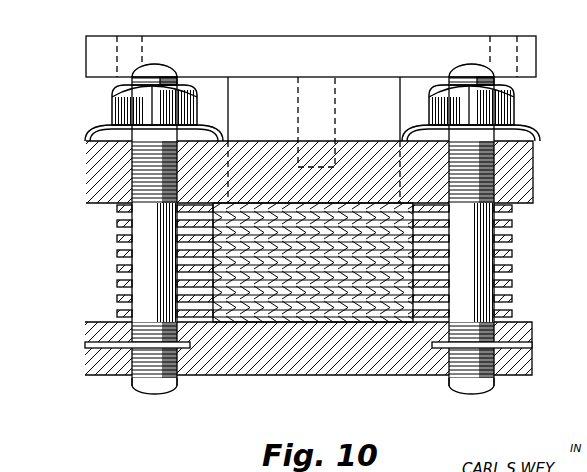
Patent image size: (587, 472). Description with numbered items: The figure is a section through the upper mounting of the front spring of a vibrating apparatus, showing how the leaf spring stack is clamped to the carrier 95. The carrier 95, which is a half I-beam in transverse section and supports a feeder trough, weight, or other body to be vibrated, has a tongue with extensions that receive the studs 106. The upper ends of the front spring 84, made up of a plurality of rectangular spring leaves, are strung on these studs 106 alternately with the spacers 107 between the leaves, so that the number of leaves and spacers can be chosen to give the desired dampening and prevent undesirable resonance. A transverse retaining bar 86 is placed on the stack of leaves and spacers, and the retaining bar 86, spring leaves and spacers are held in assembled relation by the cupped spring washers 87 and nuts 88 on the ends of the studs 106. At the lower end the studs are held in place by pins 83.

The carrier 95 is at (438, 46).
The studs 106 is at (155, 63).
The nuts 88 is at (516, 108).
The cupped spring washers 87 is at (527, 136).
The transverse retaining bar 86 is at (90, 168).
The front spring 84 is at (512, 278).
The spacers 107 is at (180, 294).
The pins 83 is at (88, 346).